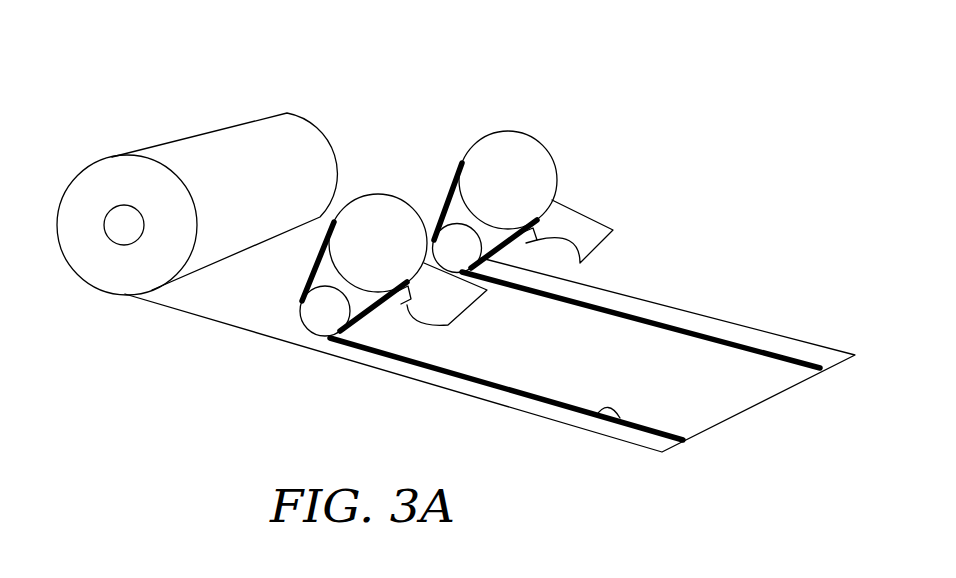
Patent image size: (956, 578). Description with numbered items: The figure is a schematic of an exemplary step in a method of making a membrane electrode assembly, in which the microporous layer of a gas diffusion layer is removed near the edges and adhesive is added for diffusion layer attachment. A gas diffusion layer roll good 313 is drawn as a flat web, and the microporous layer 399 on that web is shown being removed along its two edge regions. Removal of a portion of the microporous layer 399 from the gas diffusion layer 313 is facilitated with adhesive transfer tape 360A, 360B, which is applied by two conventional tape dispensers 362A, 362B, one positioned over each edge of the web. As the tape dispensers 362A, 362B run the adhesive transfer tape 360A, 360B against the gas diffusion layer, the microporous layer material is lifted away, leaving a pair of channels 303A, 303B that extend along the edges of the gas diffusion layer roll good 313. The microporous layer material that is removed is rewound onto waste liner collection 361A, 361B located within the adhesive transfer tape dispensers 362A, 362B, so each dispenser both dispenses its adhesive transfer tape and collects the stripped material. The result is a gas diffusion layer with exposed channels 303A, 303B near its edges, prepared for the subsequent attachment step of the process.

The gas diffusion layer roll good 313 is at (765, 402).
The channel 303A is at (592, 412).
The channel 303B is at (753, 347).
The microporous layer 399 is at (187, 297).
The adhesive transfer tape 360A is at (312, 266).
The adhesive transfer tape 360B is at (447, 193).
The waste liner collection 361A is at (372, 312).
The waste liner collection 361B is at (483, 261).
The tape dispenser 362A is at (380, 210).
The tape dispenser 362B is at (507, 152).